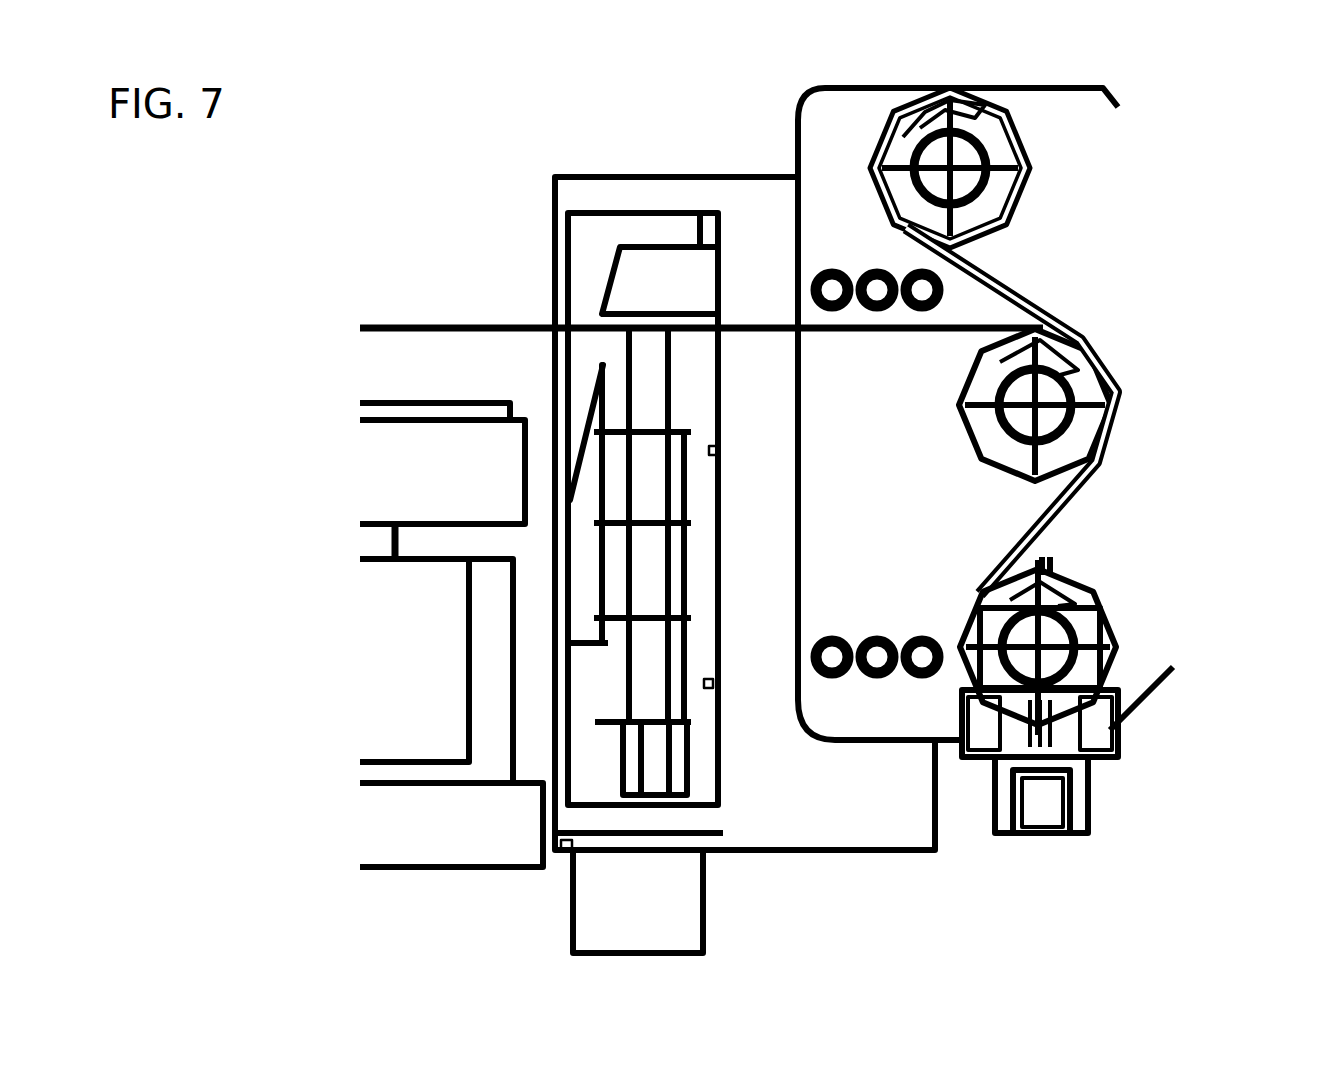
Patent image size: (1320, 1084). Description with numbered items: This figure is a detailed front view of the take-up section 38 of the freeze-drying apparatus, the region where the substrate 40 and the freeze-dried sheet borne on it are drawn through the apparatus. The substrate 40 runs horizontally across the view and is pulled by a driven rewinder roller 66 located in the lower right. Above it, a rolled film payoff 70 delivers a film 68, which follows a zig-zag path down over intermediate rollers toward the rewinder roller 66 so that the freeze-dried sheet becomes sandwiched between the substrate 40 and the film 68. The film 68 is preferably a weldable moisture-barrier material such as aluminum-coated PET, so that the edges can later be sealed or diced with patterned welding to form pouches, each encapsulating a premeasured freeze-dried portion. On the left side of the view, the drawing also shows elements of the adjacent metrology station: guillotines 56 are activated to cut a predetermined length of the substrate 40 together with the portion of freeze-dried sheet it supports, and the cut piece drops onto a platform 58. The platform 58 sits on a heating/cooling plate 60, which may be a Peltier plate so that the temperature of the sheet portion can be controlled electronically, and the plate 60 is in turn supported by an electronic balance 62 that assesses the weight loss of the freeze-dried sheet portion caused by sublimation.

The take-up section 38 is at (1200, 175).
The substrate 40 is at (410, 326).
The guillotine 56 is at (602, 393).
The platform 58 is at (397, 411).
The heating/cooling plate 60 is at (397, 473).
The electronic balance 62 is at (397, 682).
The driven rewinder roller 66 is at (1085, 600).
The film 68 is at (997, 290).
The rolled film payoff 70 is at (900, 150).